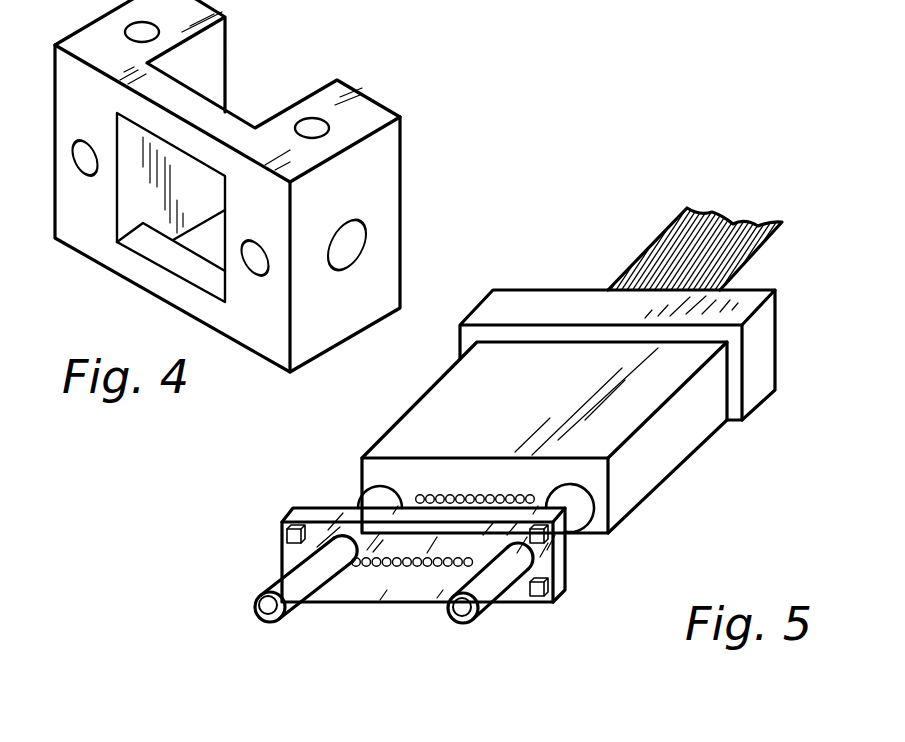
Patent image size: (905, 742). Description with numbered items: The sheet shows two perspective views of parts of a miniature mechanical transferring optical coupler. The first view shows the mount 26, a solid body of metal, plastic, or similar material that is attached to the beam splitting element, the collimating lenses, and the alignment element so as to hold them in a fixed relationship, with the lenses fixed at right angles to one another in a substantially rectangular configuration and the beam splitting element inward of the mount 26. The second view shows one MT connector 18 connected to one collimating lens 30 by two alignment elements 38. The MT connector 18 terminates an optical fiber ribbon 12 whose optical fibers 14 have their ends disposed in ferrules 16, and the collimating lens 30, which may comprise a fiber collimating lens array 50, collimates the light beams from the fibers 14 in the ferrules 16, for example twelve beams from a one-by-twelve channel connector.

In FIG. 5, the optical fiber ribbon 12 is at (774, 258).
In FIG. 5, the optical fibers 14 is at (656, 272).
In FIG. 5, the ferrules 16 is at (430, 495).
In FIG. 5, the MT connector 18 is at (660, 449).
In FIG. 4, the mount 26 is at (336, 39).
In FIG. 5, the collimating lens 30 is at (409, 594).
In FIG. 5, the alignment element 38 is at (278, 582).
In FIG. 5, the fiber collimating lens array 50 is at (374, 562).